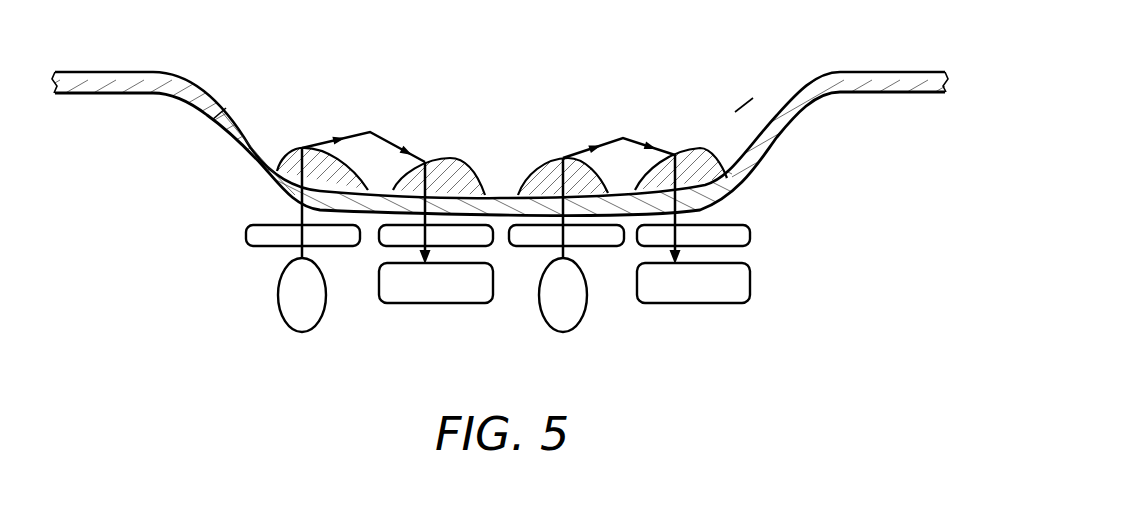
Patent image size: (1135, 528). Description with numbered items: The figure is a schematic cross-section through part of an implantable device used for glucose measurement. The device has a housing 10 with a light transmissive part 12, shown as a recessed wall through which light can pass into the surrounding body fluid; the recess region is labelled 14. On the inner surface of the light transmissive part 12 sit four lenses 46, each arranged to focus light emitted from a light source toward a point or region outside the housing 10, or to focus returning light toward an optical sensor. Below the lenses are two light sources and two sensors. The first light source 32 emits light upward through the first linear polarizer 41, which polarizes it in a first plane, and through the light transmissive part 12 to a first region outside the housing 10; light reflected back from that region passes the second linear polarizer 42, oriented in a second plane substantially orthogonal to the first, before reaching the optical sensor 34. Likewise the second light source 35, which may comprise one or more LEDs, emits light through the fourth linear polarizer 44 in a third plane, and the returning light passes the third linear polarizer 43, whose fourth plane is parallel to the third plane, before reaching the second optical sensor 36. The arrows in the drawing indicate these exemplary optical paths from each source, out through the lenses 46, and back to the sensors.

The housing 10 is at (858, 72).
The light transmissive part 12 is at (230, 122).
The recess 14 is at (749, 115).
The lens 46 is at (282, 166).
The first linear polarizer 41 is at (246, 232).
The second linear polarizer 42 is at (380, 246).
The third linear polarizer 43 is at (752, 232).
The fourth linear polarizer 44 is at (607, 247).
The first light source 32 is at (302, 334).
The second light source 35 is at (563, 334).
The optical sensor 34 is at (433, 305).
The second optical sensor 36 is at (752, 280).